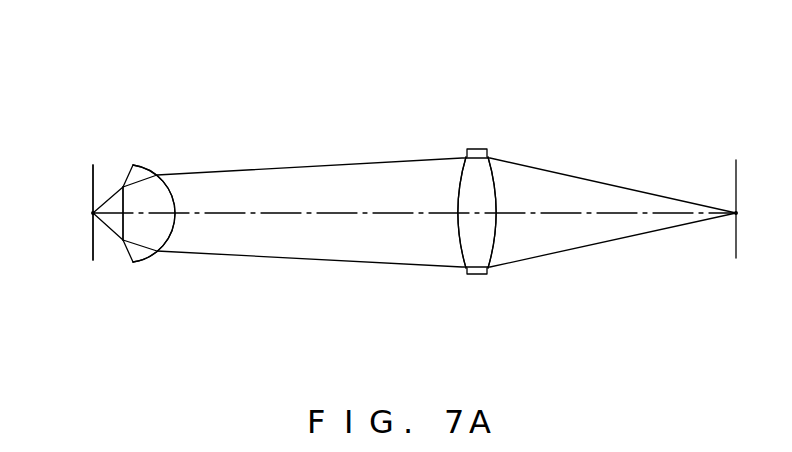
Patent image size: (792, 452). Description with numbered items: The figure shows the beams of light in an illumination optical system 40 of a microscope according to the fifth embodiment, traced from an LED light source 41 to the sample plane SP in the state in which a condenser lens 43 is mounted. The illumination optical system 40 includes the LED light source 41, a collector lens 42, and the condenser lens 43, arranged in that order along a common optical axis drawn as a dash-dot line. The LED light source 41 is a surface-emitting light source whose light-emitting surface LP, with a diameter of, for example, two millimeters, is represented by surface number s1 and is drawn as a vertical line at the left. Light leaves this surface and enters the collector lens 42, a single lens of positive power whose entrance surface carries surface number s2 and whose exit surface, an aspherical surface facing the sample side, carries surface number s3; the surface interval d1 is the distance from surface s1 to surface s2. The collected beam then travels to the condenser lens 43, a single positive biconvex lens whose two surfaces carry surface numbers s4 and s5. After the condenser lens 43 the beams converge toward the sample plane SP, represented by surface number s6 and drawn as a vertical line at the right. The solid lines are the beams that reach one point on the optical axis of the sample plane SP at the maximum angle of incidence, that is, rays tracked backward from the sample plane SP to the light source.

The illumination optical system 40 is at (740, 46).
The LED light source 41 is at (92, 264).
The collector lens 42 is at (155, 242).
The condenser lens 43 is at (477, 255).
The surface number s1 is at (98, 168).
The surface number s2 is at (125, 184).
The surface number s3 is at (142, 162).
The surface number s4 is at (459, 177).
The surface number s5 is at (496, 178).
The surface number s6 is at (733, 183).